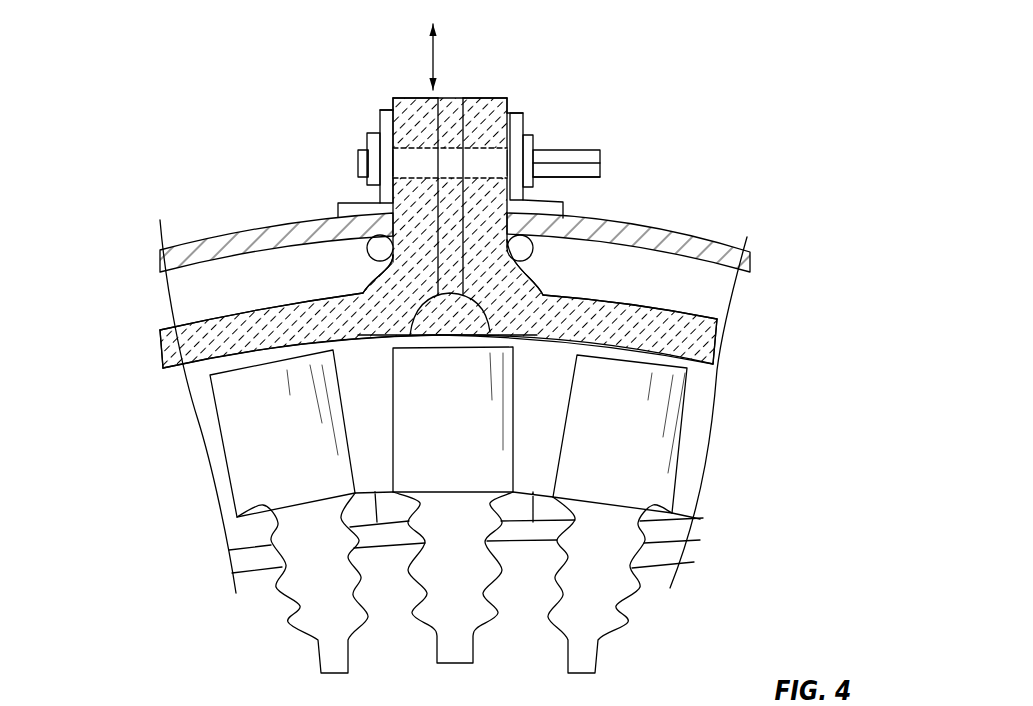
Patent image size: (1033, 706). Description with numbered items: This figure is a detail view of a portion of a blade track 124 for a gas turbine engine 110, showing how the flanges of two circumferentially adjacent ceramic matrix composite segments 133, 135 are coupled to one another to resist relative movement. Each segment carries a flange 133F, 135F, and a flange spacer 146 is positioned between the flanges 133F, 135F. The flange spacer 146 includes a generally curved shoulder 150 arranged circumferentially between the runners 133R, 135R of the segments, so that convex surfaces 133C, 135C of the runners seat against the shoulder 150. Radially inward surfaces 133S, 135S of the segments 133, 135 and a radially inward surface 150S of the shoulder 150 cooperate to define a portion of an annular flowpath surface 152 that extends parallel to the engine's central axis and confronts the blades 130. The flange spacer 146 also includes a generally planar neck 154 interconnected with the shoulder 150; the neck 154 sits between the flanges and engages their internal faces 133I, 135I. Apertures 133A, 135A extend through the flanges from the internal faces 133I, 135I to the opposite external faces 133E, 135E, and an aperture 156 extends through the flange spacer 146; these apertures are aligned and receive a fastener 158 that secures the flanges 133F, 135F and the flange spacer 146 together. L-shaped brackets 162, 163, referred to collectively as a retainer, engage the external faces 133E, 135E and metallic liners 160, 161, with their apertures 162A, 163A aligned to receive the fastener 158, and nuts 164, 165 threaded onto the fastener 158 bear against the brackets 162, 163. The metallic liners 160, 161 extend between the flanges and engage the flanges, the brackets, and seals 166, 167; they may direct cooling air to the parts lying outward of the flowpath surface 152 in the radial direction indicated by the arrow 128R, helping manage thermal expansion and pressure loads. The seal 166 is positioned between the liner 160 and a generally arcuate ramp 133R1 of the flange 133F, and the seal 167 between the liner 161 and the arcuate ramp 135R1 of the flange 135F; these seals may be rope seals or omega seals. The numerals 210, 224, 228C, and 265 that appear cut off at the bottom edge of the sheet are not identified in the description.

The gas turbine engine 110 is at (830, 30).
The blade track 124 is at (817, 99).
The arrow indicating radial direction 128R is at (437, 55).
The blades 130 is at (556, 472).
The ceramic matrix composite segment 133 is at (690, 342).
The aperture 133A is at (483, 157).
The convex surface 133C is at (477, 330).
The external face 133E is at (575, 193).
The flange 133F is at (502, 95).
The internal face 133I is at (511, 99).
The runner 133R is at (630, 333).
The generally arcuate ramp 133R1 is at (490, 277).
The radially inward surface 133S is at (690, 302).
The ceramic matrix composite segment 135 is at (193, 352).
The aperture 135A is at (414, 156).
The convex surface 135C is at (423, 333).
The external face 135E is at (380, 193).
The flange 135F is at (410, 95).
The internal face 135I is at (379, 105).
The runner 135R is at (272, 338).
The generally arcuate ramp 135R1 is at (393, 287).
The radially inward surface 135S is at (212, 365).
The flange spacer 146 is at (453, 98).
The shoulder 150 is at (545, 297).
The radially inward surface 150S is at (455, 312).
The annular flowpath surface 152 is at (687, 370).
The neck 154 is at (725, 208).
The aperture 156 is at (445, 167).
The fastener 158 is at (588, 144).
The metallic liner 160 is at (198, 242).
The metallic liner 161 is at (760, 245).
The L-shaped bracket 162 is at (385, 95).
The aperture 162A is at (377, 165).
The L-shaped bracket 163 is at (571, 199).
The aperture 163A is at (533, 162).
The nut 164 is at (362, 137).
The nut 165 is at (528, 121).
The seal 166 is at (265, 252).
The seal 167 is at (538, 251).
The stator assembly 210 is at (58, 690).
The stator vane 224 is at (55, 697).
The vane contact face 228C is at (430, 705).
The seal member 265 is at (535, 705).